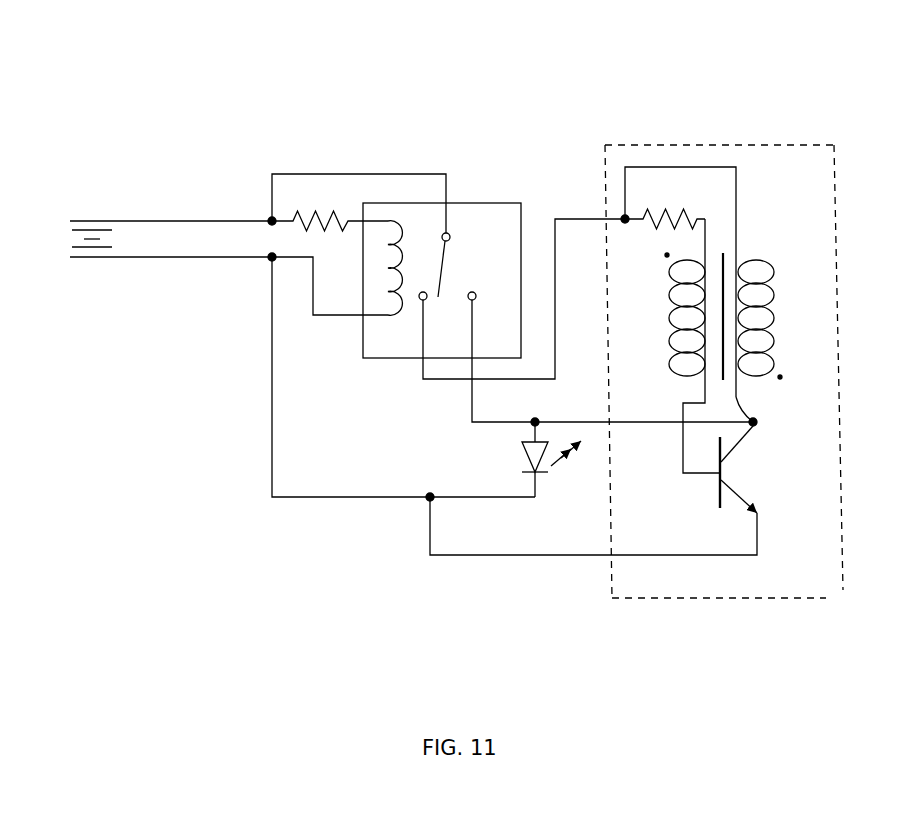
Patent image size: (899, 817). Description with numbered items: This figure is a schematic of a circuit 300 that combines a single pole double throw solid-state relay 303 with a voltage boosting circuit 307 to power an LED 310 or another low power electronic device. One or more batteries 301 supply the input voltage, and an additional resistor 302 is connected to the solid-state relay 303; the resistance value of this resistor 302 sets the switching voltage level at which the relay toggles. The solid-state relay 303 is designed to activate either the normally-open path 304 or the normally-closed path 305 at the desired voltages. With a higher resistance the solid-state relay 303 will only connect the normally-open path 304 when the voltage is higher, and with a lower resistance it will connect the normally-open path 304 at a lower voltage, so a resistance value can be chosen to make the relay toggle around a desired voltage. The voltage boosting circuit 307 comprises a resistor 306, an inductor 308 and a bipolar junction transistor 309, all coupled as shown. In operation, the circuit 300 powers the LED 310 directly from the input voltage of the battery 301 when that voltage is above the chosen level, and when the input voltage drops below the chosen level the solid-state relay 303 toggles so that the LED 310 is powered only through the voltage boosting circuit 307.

The circuit 300 is at (433, 90).
The battery 301 is at (142, 228).
The resistor 302 is at (330, 210).
The single pole double throw solid-state relay 303 is at (503, 236).
The normally-open path 304 is at (614, 363).
The normally-closed path 305 is at (526, 297).
The resistor 306 is at (665, 206).
The voltage boosting circuit 307 is at (697, 143).
The inductor 308 is at (739, 346).
The bipolar junction transistor 309 is at (713, 469).
The LED 310 is at (533, 459).